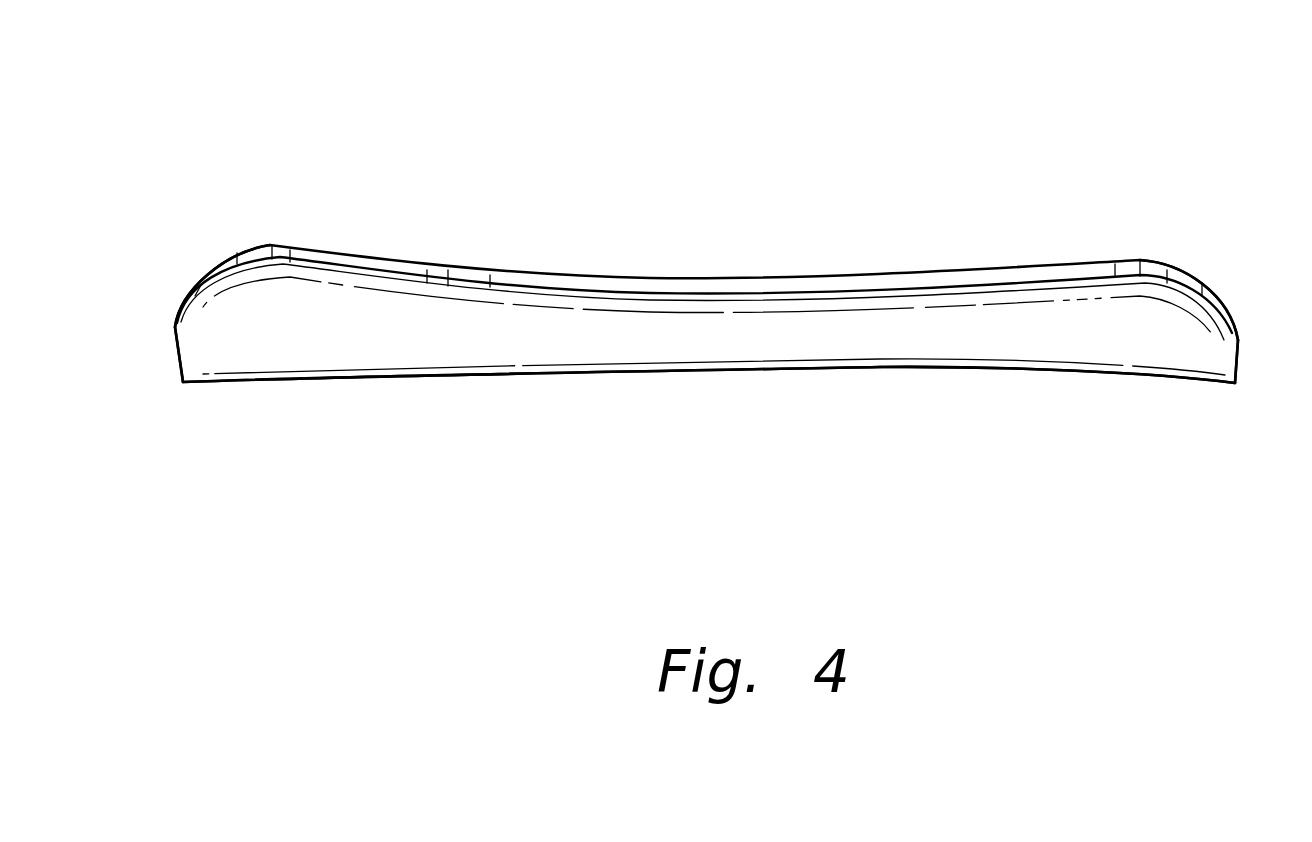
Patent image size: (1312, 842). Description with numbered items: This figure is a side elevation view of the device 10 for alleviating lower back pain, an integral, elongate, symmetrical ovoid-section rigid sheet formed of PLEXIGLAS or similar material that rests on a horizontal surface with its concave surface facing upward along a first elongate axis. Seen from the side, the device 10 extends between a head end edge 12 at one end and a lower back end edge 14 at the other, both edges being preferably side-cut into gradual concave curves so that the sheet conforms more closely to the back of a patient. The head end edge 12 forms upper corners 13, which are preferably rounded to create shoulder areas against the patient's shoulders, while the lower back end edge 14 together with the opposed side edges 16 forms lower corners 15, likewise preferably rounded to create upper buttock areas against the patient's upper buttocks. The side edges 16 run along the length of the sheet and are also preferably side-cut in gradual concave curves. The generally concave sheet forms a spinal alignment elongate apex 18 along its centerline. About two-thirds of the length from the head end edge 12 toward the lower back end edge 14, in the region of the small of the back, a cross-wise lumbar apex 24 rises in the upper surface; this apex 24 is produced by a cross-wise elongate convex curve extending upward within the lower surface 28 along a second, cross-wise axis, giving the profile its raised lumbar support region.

The device to alleviate lower back pain 10 is at (700, 243).
The head end edge 12 is at (175, 352).
The upper corners 13 is at (253, 243).
The lower back end edge 14 is at (1242, 362).
The lower corners 15 is at (1153, 265).
The side edges 16 is at (778, 283).
The spinal alignment elongate apex 18 is at (533, 378).
The lumbar apex 24 is at (932, 368).
The lower surface 28 is at (370, 347).